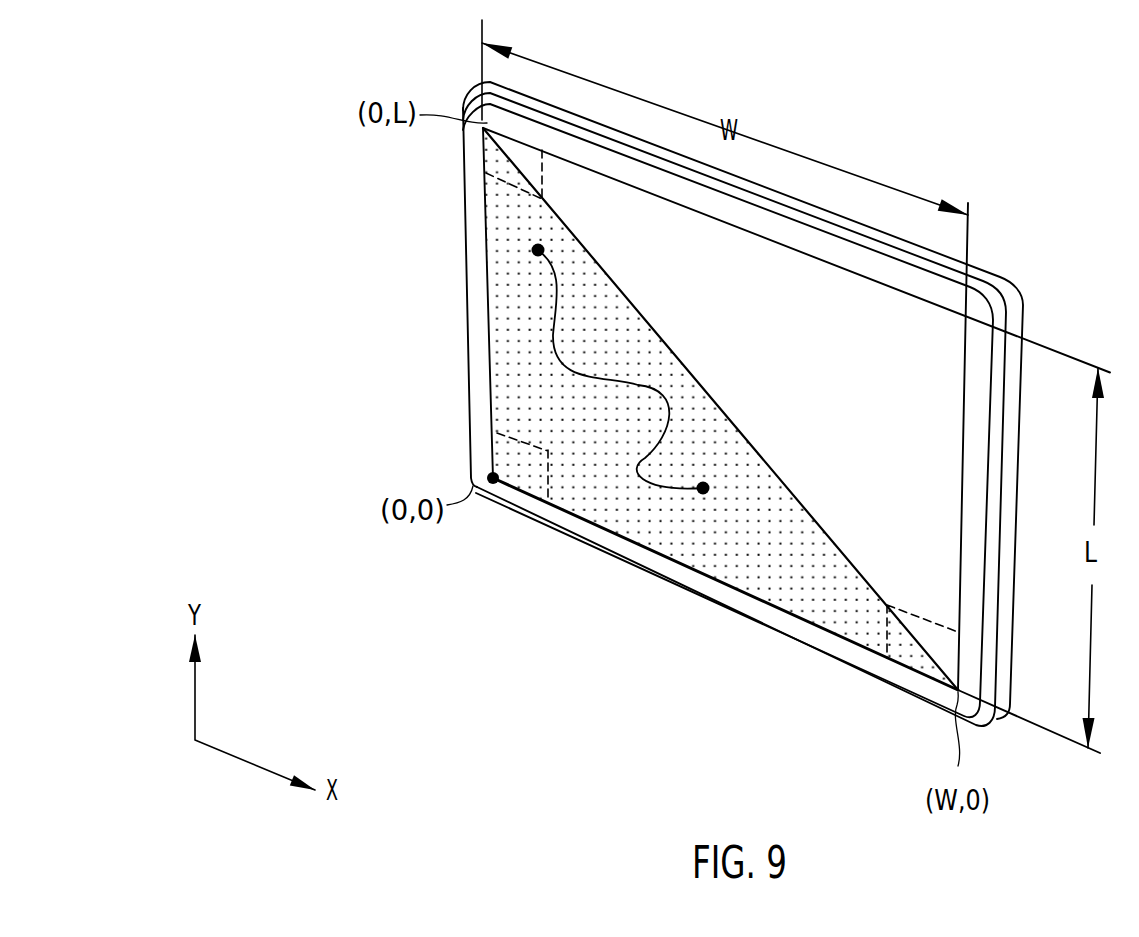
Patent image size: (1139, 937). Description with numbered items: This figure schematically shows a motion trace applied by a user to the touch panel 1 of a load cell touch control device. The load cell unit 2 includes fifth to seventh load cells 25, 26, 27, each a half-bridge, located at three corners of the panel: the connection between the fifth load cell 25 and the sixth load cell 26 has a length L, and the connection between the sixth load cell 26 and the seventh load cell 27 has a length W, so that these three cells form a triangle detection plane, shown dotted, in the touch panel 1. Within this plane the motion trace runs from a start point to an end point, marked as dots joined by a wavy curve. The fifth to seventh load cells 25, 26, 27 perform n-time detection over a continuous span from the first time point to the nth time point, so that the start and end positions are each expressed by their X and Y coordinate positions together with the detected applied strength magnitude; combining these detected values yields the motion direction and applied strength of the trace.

The touch panel 1 is at (463, 255).
The load cell unit 2 is at (742, 446).
The fifth load cell 25 is at (490, 153).
The sixth load cell 26 is at (508, 455).
The seventh load cell 27 is at (915, 654).